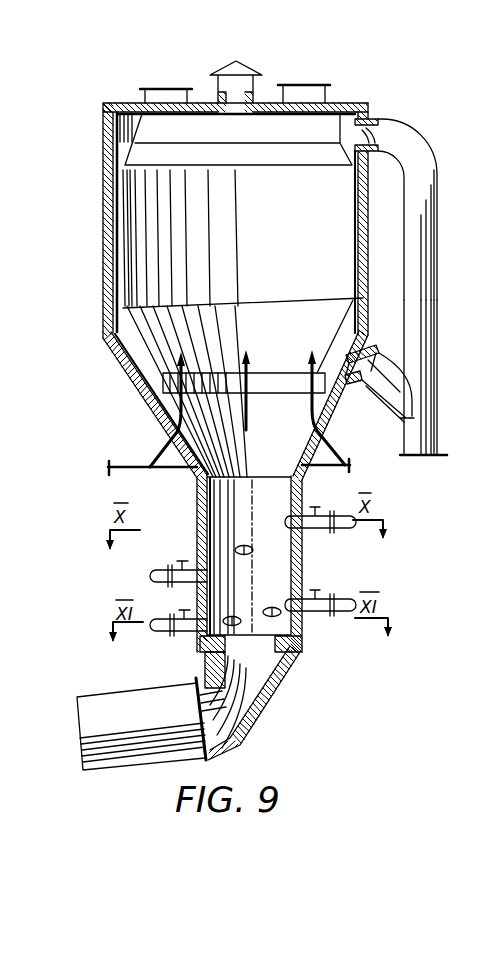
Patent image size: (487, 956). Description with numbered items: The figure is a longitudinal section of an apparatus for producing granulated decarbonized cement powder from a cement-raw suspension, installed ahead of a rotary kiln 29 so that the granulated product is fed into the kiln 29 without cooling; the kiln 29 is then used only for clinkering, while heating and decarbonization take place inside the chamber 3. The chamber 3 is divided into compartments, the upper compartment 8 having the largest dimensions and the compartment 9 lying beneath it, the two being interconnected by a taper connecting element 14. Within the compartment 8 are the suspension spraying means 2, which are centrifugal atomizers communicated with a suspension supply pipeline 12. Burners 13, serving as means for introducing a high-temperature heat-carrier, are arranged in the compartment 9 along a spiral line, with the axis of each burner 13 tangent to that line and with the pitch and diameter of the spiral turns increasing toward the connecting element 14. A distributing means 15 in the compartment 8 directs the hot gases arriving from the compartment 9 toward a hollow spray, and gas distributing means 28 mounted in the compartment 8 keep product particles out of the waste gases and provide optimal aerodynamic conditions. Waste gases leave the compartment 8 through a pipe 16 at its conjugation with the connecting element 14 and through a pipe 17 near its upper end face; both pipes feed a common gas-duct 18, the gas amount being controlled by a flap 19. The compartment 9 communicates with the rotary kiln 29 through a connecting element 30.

The suspension spraying means 2 is at (160, 370).
The chamber 3 is at (100, 176).
The compartment 8 is at (110, 268).
The compartment 9 is at (300, 556).
The suspension supply pipeline 12 is at (140, 467).
The burners 13 is at (300, 607).
The taper connecting element 14 is at (155, 396).
The distributing means 15 is at (155, 322).
The waste gas discharge pipe 16 is at (362, 365).
The waste gas discharge pipe 17 is at (370, 133).
The common gas-duct 18 is at (428, 428).
The flap 19 is at (405, 243).
The gas distributing means 28 is at (140, 130).
The rotary kiln 29 is at (143, 698).
The connecting element 30 is at (267, 703).